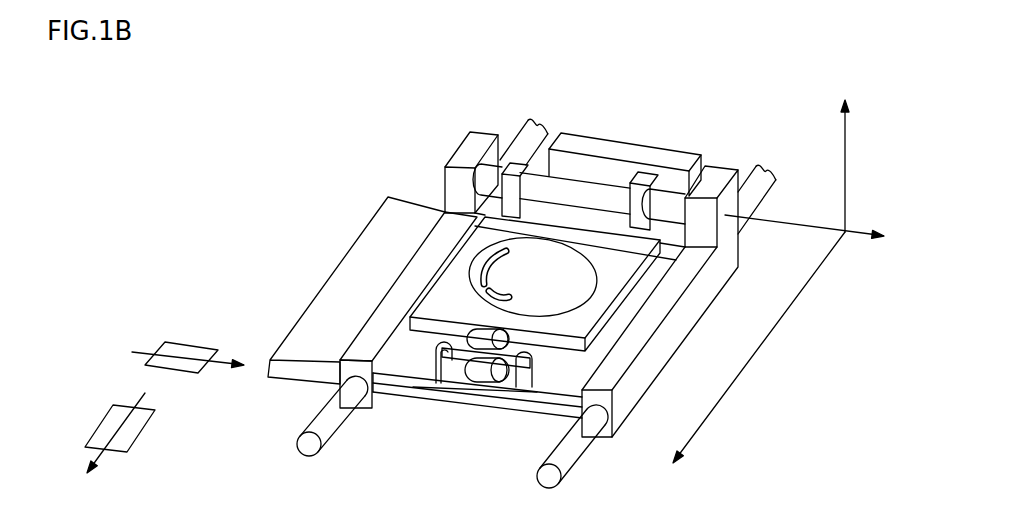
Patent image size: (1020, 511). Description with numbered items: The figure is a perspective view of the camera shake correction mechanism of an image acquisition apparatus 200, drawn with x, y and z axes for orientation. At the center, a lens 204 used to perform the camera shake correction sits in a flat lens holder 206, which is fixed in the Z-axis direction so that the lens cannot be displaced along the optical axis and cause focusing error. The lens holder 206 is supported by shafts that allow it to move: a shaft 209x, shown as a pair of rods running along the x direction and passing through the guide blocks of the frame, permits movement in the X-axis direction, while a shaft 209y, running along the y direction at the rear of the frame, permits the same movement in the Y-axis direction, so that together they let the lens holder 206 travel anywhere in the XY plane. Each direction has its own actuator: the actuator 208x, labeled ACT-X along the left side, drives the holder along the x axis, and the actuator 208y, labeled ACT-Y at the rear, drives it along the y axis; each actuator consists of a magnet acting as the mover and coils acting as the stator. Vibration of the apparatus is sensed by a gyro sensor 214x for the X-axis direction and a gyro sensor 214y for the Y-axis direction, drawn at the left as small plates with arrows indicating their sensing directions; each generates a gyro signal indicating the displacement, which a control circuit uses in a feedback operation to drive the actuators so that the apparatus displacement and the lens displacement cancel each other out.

The image acquisition apparatus 200 is at (305, 252).
The lens 204 is at (560, 288).
The lens holder 206 is at (620, 263).
The actuator (motor) for the X-axis direction 208x is at (445, 172).
The actuator (motor) for the Y-axis direction 208y is at (618, 140).
The shaft for the X-axis direction 209x is at (328, 418).
The shaft for the Y-axis direction 209y is at (670, 200).
The gyro sensor for the X-axis direction 214x is at (138, 430).
The gyro sensor for the Y-axis direction 214y is at (185, 342).